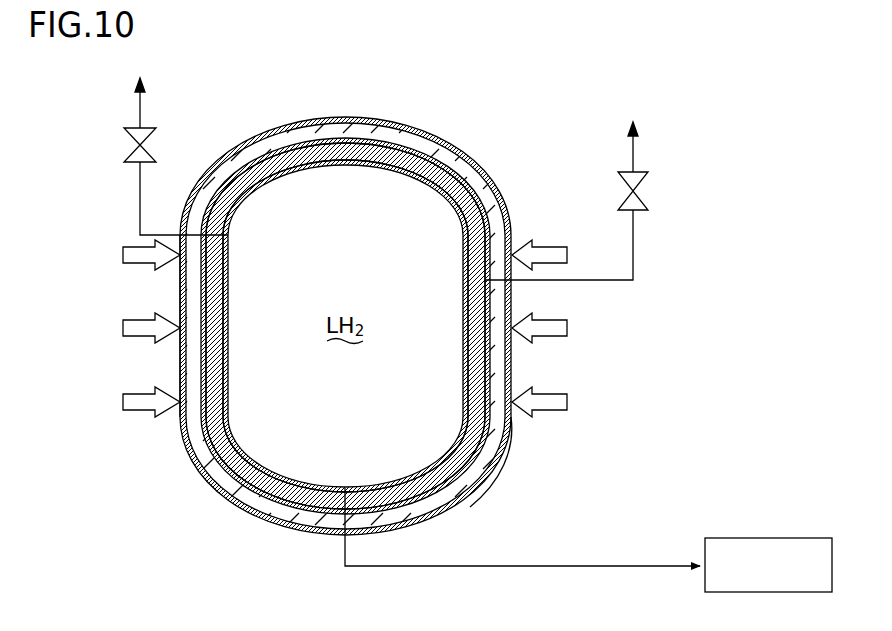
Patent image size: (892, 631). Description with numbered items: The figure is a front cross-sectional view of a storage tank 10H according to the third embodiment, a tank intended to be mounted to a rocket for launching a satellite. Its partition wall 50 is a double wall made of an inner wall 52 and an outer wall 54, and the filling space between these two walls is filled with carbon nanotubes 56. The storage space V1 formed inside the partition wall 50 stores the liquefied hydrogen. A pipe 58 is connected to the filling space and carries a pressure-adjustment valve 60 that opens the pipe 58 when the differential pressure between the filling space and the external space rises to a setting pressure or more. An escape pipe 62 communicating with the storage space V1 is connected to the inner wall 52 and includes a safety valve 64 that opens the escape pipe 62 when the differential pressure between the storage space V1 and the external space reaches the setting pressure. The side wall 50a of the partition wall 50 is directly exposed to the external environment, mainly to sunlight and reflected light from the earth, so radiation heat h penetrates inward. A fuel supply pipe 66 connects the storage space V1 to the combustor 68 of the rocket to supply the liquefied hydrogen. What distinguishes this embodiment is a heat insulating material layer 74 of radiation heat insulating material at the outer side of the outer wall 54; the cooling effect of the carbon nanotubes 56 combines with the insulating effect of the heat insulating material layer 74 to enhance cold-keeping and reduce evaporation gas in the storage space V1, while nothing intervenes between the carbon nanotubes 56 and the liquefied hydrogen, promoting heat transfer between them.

The storage tank 10H is at (350, 291).
The partition wall 50 is at (278, 120).
The side wall 50a is at (178, 297).
The inner wall 52 is at (347, 166).
The outer wall 54 is at (347, 139).
The carbon nanotubes 56 is at (469, 184).
The storage space V1 is at (262, 442).
The pipe 58 is at (640, 239).
The pressure-adjustment valve 60 is at (650, 187).
The escape pipe 62 is at (140, 210).
The safety valve 64 is at (133, 146).
The fuel supply pipe 66 is at (580, 565).
The combustor 68 is at (762, 537).
The heat insulating material layer 74 is at (500, 470).
The radiation heat h is at (568, 320).